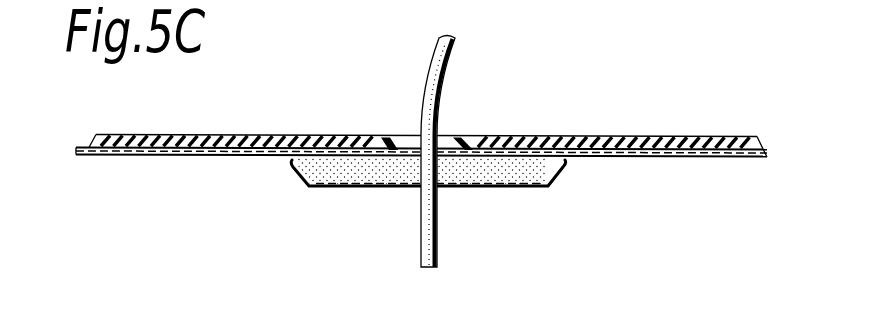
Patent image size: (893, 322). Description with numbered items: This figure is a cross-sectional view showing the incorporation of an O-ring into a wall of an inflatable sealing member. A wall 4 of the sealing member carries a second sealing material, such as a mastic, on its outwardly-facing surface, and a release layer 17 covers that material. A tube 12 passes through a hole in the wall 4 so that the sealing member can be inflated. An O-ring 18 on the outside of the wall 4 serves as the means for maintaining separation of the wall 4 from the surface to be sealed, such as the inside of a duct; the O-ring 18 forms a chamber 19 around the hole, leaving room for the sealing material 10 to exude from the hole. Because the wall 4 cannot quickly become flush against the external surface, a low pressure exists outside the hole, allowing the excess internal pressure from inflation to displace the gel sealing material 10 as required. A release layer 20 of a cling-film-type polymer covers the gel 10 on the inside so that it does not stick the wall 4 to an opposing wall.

The wall 4 is at (83, 157).
The release layer 17 is at (197, 134).
The O-ring 18 is at (390, 137).
The chamber 19 is at (451, 136).
The tube 12 is at (434, 48).
The release layer 20 is at (355, 192).
The sealing material 10 is at (547, 190).